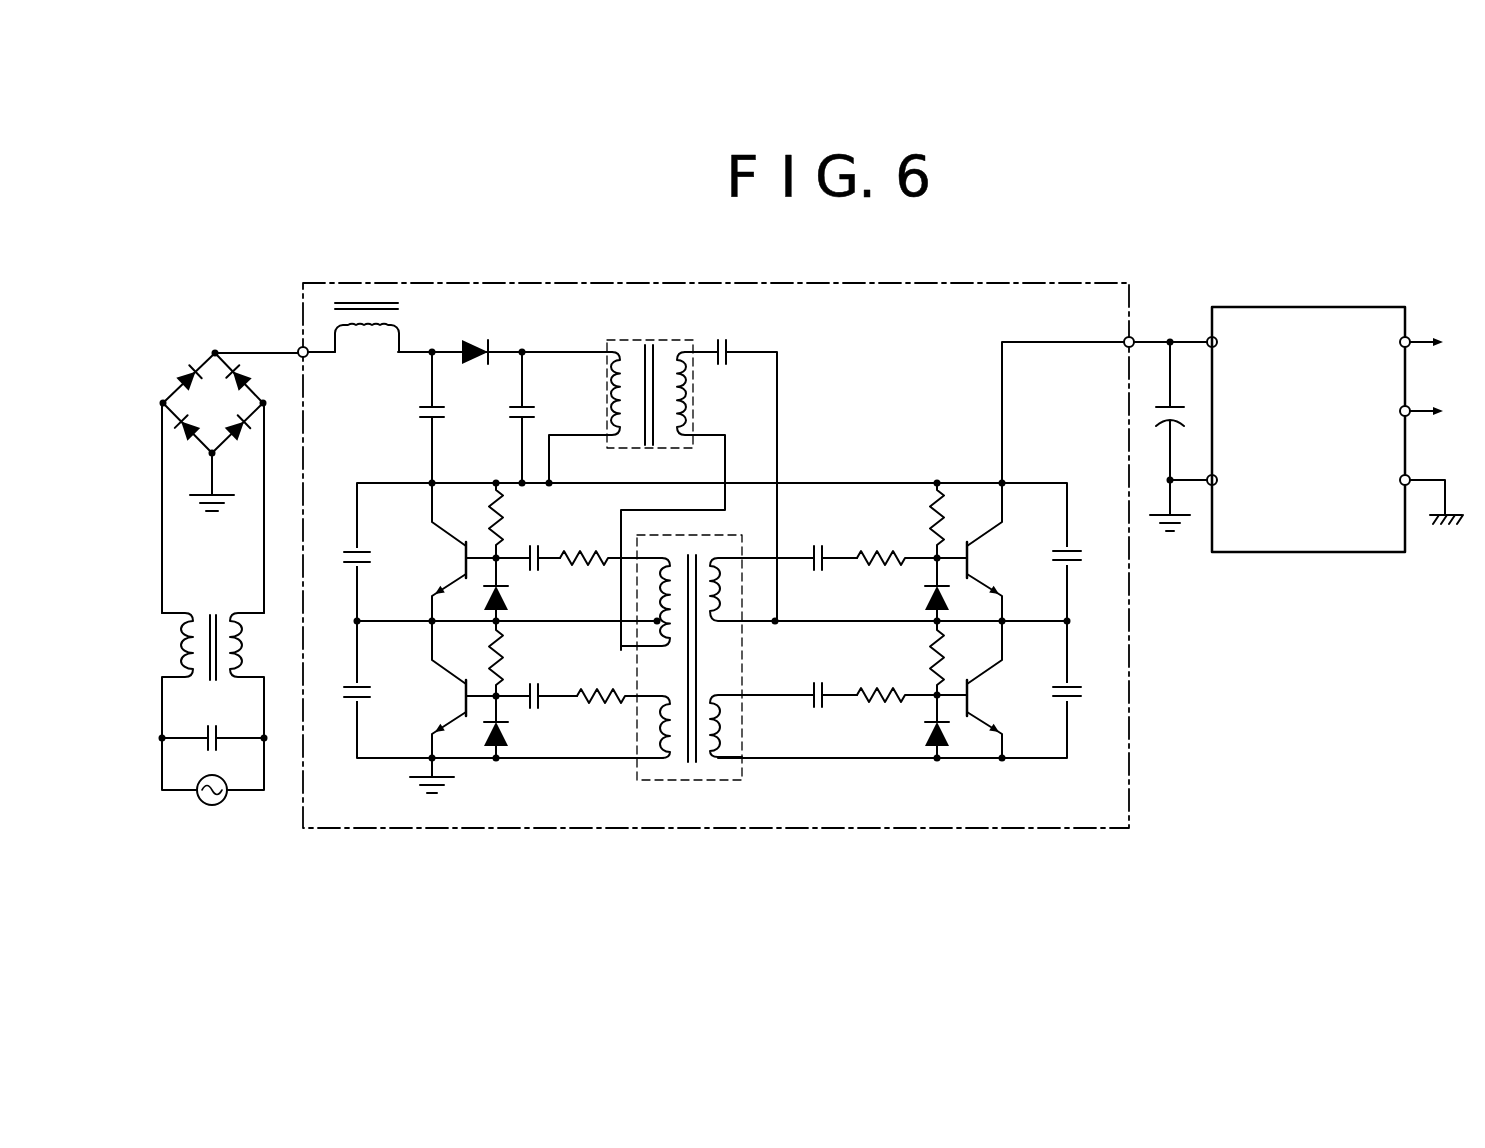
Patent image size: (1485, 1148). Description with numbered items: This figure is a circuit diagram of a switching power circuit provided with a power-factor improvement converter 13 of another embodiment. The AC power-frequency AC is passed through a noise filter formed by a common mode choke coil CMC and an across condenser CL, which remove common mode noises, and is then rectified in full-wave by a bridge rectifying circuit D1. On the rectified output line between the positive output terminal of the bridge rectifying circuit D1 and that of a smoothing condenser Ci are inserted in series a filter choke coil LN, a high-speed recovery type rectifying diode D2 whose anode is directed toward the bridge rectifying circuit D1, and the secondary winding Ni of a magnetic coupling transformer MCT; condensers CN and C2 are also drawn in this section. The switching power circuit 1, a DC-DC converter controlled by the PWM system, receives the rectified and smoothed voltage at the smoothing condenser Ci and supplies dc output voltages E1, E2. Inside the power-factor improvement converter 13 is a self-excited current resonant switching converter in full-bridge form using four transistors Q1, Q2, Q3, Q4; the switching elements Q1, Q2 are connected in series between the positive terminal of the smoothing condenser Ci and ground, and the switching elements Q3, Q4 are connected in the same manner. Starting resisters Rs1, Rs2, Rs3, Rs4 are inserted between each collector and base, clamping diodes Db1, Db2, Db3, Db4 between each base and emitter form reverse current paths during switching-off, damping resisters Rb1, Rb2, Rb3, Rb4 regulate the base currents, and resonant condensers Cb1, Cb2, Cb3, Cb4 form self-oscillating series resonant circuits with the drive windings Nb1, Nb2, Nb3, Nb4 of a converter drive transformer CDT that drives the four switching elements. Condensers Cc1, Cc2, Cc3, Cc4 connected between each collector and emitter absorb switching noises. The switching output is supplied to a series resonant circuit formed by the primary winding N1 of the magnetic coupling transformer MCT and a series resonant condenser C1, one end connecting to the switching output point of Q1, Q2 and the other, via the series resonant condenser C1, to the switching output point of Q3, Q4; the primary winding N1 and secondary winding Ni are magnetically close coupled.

The power-factor improvement converter 13 is at (428, 283).
The switching power circuit 1 is at (1275, 307).
The bridge rectifying circuit D1 is at (226, 420).
The filter choke coil LN is at (367, 344).
The high-speed recovery type rectifying diode D2 is at (474, 337).
The capacitor CN is at (415, 417).
The capacitor C2 is at (505, 417).
The magnetic coupling transformer MCT is at (639, 480).
The secondary winding Ni is at (616, 377).
The primary winding N1 is at (686, 392).
The series resonant condenser C1 is at (718, 337).
The condenser Cc1 is at (375, 572).
The condenser Cc2 is at (375, 707).
The condenser Cc3 is at (1085, 569).
The condenser Cc4 is at (1085, 706).
The switching element Q1 is at (464, 552).
The switching element Q2 is at (464, 690).
The switching element Q3 is at (969, 552).
The switching element Q4 is at (969, 690).
The starting resister Rs1 is at (468, 520).
The starting resister Rs2 is at (472, 658).
The starting resister Rs3 is at (958, 520).
The starting resister Rs4 is at (960, 658).
The clamping diode Db1 is at (520, 589).
The clamping diode Db2 is at (520, 727).
The clamping diode Db3 is at (910, 589).
The clamping diode Db4 is at (908, 727).
The resonant condenser Cb1 is at (528, 547).
The resonant condenser Cb2 is at (536, 684).
The resonant condenser Cb3 is at (799, 544).
The resonant condenser Cb4 is at (799, 680).
The damping resister Rb1 is at (611, 545).
The damping resister Rb2 is at (619, 682).
The damping resister Rb3 is at (894, 541).
The damping resister Rb4 is at (897, 680).
The converter drive transformer CDT is at (705, 676).
The drive winding Nb1 is at (653, 592).
The drive winding Nb2 is at (655, 729).
The drive winding Nb3 is at (776, 589).
The drive winding Nb4 is at (774, 727).
The common mode choke coil CMC is at (213, 658).
The across condenser CL is at (213, 725).
The AC power-frequency AC is at (213, 792).
The smoothing condenser Ci is at (1169, 411).
The dc output voltage E1 is at (1438, 343).
The dc output voltage E2 is at (1438, 412).